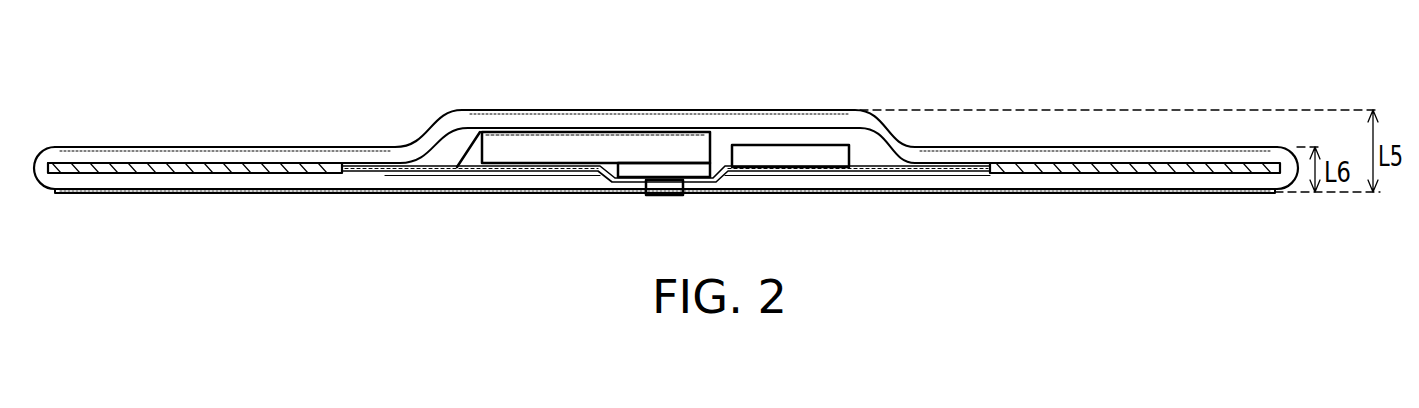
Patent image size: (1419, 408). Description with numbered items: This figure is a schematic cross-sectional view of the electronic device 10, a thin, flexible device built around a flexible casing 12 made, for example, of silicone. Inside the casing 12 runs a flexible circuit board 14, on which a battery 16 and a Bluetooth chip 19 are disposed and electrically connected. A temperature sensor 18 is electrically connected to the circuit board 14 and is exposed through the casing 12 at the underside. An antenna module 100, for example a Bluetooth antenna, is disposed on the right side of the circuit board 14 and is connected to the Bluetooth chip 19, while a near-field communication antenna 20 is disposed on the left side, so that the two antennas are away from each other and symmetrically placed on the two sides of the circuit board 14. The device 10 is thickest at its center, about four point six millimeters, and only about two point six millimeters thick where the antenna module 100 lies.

The electronic device 10 is at (1398, 275).
The casing 12 is at (176, 185).
The circuit board 14 is at (912, 171).
The battery 16 is at (660, 143).
The temperature sensor 18 is at (665, 196).
The Bluetooth chip 19 is at (795, 160).
The near-field communication antenna 20 is at (259, 173).
The antenna module 100 is at (1138, 174).